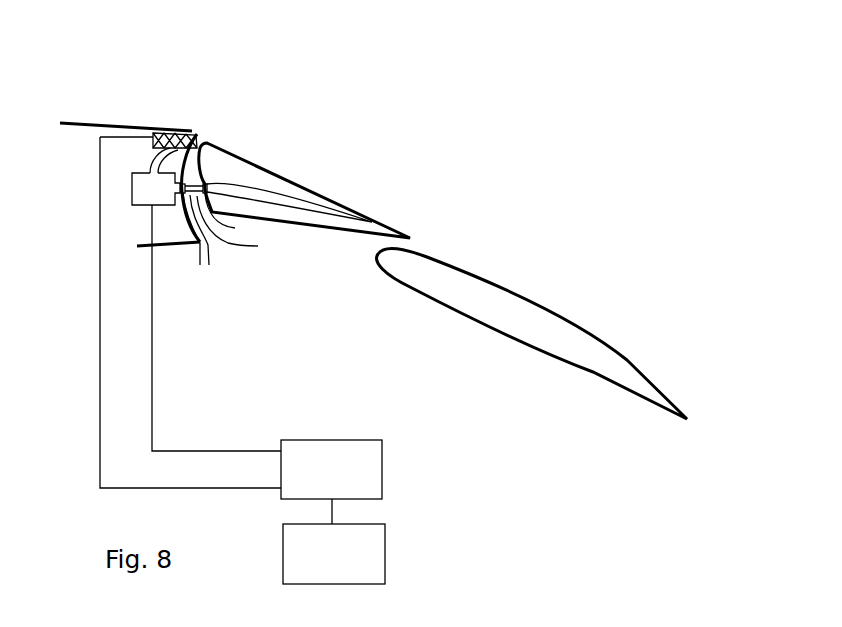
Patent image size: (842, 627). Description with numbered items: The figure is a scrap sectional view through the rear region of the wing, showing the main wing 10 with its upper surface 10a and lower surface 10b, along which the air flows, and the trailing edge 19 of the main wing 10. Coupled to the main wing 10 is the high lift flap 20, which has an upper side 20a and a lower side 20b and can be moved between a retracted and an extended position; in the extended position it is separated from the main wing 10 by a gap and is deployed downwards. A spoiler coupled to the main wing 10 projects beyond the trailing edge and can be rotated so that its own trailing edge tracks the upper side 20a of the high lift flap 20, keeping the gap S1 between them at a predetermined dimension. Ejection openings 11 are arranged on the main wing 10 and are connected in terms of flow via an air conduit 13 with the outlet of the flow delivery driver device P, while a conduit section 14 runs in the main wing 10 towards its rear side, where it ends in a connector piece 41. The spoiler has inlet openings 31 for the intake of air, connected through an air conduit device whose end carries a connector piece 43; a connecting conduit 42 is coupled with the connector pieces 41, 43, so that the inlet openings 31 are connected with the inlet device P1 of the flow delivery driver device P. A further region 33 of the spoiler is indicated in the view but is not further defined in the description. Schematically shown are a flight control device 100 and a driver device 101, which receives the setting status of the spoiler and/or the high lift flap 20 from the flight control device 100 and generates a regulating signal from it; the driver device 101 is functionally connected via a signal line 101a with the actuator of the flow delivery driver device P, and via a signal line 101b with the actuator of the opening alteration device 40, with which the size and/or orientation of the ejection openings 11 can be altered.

The main wing 10 is at (135, 240).
The upper surface 10a is at (67, 121).
The lower surface 10b is at (190, 243).
The ejection openings 11 is at (177, 125).
The air conduit 13 is at (150, 164).
The conduit section 14 is at (181, 196).
The trailing edge 19 is at (198, 134).
The high lift flap 20 is at (596, 372).
The upper side 20a is at (574, 335).
The lower surface of main wing 20b is at (566, 368).
The inlet openings 31 is at (371, 220).
The fixed leading edge tip 33 is at (412, 240).
The opening alteration device 40 is at (183, 130).
The connector piece 41 is at (207, 253).
The connecting conduit 42 is at (241, 226).
The connector piece 43 is at (235, 228).
The flight control device 100 is at (334, 554).
The driver device 101 is at (241, 330).
The signal line 101a is at (216, 328).
The signal line 101b is at (190, 312).
The flow delivery driver device P is at (145, 205).
The inlet device P1 is at (165, 194).
The gap S1 is at (191, 129).